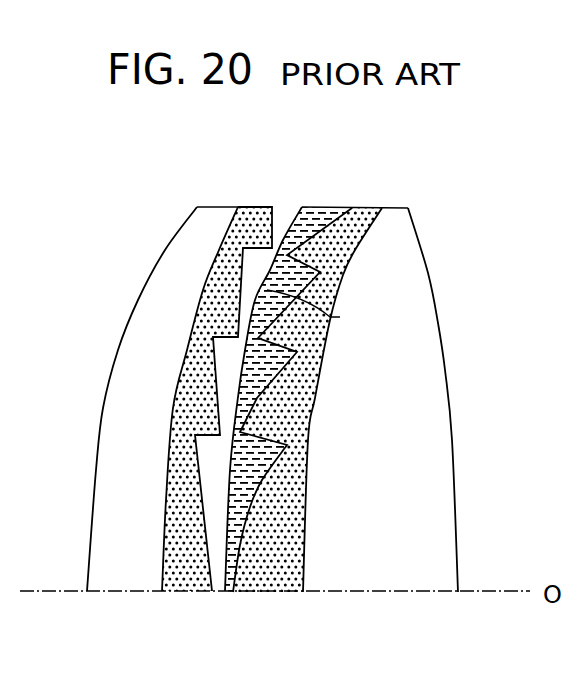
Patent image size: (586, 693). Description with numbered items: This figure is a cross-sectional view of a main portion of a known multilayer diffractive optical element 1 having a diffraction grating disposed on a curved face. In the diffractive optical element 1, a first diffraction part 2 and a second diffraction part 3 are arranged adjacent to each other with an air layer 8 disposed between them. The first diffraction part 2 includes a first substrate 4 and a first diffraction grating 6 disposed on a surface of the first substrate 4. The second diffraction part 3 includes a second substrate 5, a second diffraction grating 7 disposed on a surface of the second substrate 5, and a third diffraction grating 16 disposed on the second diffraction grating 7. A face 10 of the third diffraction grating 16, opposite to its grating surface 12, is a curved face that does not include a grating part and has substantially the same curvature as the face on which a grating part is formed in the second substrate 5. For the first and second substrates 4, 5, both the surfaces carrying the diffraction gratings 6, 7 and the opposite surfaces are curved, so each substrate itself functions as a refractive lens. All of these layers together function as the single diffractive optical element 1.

The diffractive optical element 1 is at (448, 205).
The first diffraction part 2 is at (202, 615).
The second diffraction part 3 is at (368, 615).
The first substrate 4 is at (107, 547).
The second substrate 5 is at (437, 463).
The first diffraction grating 6 is at (183, 471).
The second diffraction grating 7 is at (310, 373).
The air layer 8 is at (225, 369).
The face 10 is at (295, 222).
The grating surface 12 is at (320, 222).
The third diffraction grating 16 is at (258, 482).